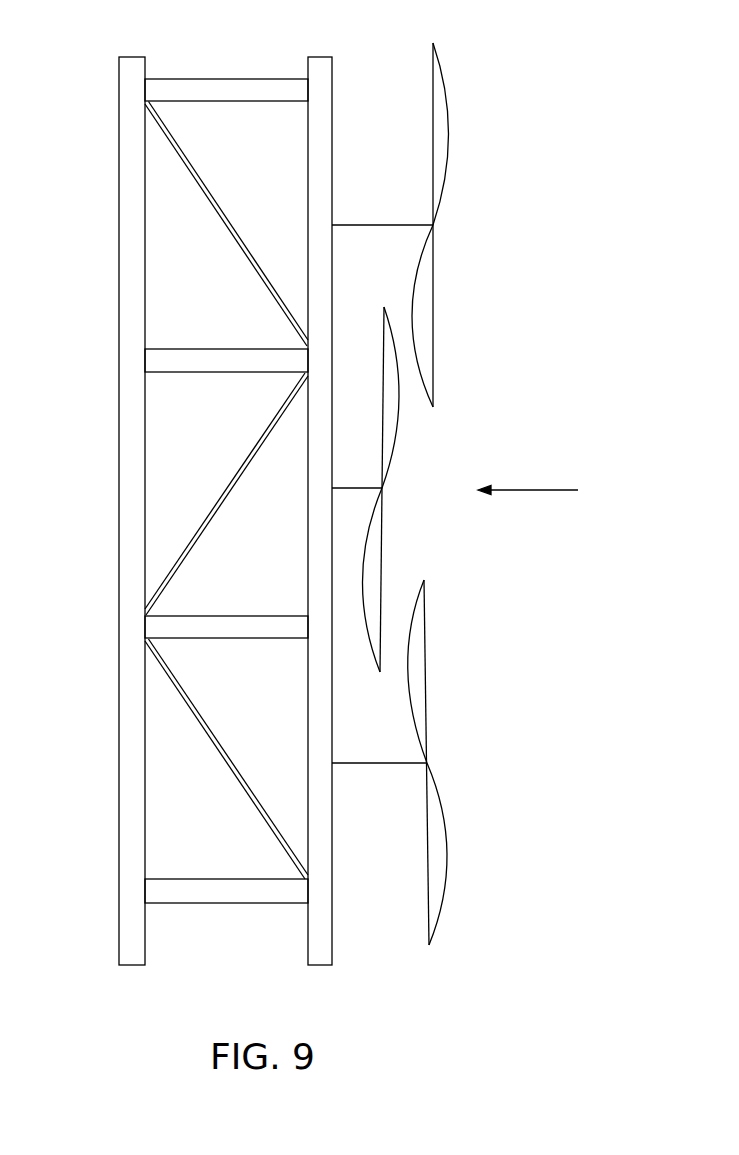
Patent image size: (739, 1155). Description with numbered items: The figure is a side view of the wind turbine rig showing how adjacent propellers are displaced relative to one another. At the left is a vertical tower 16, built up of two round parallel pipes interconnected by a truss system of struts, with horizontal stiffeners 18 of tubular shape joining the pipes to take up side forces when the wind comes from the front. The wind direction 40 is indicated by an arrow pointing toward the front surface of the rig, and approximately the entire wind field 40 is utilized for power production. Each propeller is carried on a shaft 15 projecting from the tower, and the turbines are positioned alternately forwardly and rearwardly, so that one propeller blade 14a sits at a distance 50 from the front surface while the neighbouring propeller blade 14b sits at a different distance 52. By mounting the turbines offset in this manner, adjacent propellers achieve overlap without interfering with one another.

The vertical tower 16 is at (133, 400).
The horizontal stiffener 18 is at (192, 95).
The propeller blade 14a is at (447, 100).
The propeller blade 14b is at (430, 315).
The shaft 15 is at (377, 225).
The distance 50 is at (367, 763).
The distance 52 is at (362, 488).
The wind direction 40 is at (545, 491).